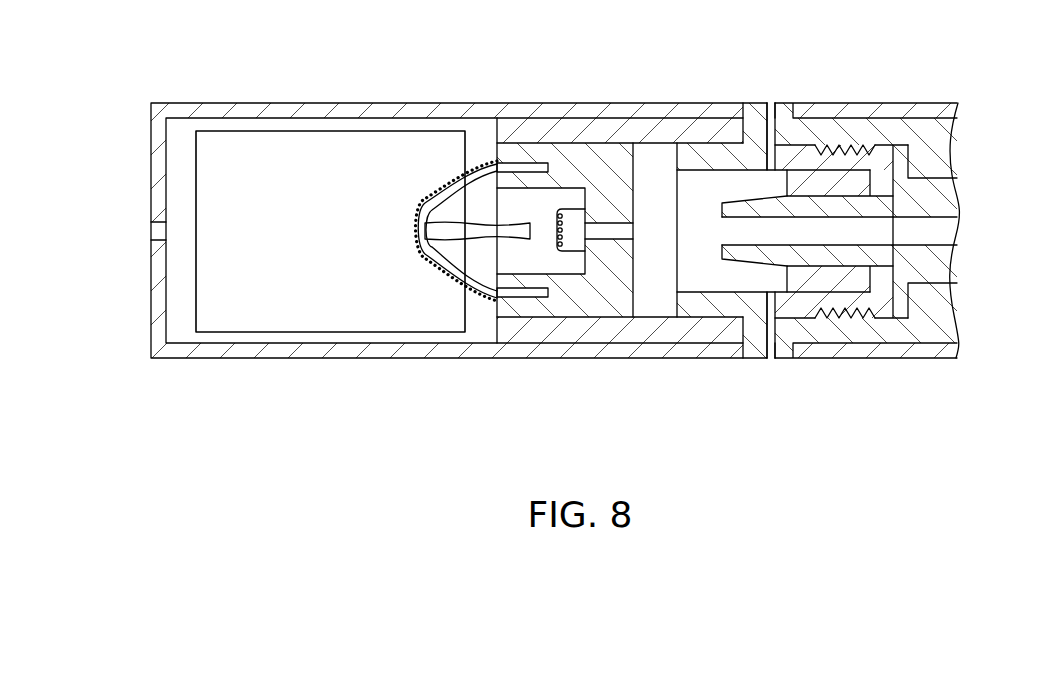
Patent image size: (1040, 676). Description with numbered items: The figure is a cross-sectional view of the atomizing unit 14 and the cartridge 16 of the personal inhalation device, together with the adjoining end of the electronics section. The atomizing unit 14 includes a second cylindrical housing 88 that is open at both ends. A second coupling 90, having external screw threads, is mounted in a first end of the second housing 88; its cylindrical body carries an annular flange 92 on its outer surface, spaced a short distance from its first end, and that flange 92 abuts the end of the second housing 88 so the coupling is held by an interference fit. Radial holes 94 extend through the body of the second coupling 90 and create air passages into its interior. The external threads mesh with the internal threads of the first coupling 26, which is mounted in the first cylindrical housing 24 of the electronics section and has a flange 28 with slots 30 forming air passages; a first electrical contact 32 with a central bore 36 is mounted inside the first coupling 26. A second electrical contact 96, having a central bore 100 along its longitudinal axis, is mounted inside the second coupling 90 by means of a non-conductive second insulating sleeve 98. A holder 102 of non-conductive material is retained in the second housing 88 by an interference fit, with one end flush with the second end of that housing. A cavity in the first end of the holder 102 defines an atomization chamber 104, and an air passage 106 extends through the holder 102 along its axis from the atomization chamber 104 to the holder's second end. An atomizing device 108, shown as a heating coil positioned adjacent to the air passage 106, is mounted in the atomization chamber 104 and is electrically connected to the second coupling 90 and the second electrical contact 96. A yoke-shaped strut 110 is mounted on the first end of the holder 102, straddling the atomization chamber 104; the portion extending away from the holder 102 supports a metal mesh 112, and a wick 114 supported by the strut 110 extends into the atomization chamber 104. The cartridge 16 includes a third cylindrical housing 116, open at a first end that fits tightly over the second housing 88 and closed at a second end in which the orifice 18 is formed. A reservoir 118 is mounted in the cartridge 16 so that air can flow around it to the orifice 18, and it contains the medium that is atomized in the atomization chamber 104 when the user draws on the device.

The atomizing unit 14 is at (604, 106).
The cartridge 16 is at (335, 96).
The orifice 18 is at (152, 231).
The first cylindrical housing 24 is at (930, 108).
The first coupling 26 is at (944, 128).
The flange 28 is at (783, 110).
The slots 30 is at (779, 118).
The first electrical contact 32 is at (953, 200).
The central bore 36 is at (946, 231).
The second cylindrical housing 88 is at (686, 130).
The second coupling 90 is at (727, 150).
The annular flange 92 is at (755, 118).
The radial holes 94 is at (778, 172).
The second electrical contact 96 is at (737, 205).
The second insulating sleeve 98 is at (841, 285).
The central bore 100 is at (723, 232).
The holder 102 is at (590, 312).
The atomization chamber 104 is at (530, 200).
The air passage 106 is at (623, 231).
The atomizing device 108 is at (556, 236).
The yoke-shaped strut 110 is at (510, 295).
The metal mesh 112 is at (438, 268).
The wick 114 is at (457, 232).
The third cylindrical housing 116 is at (415, 110).
The reservoir 118 is at (243, 150).